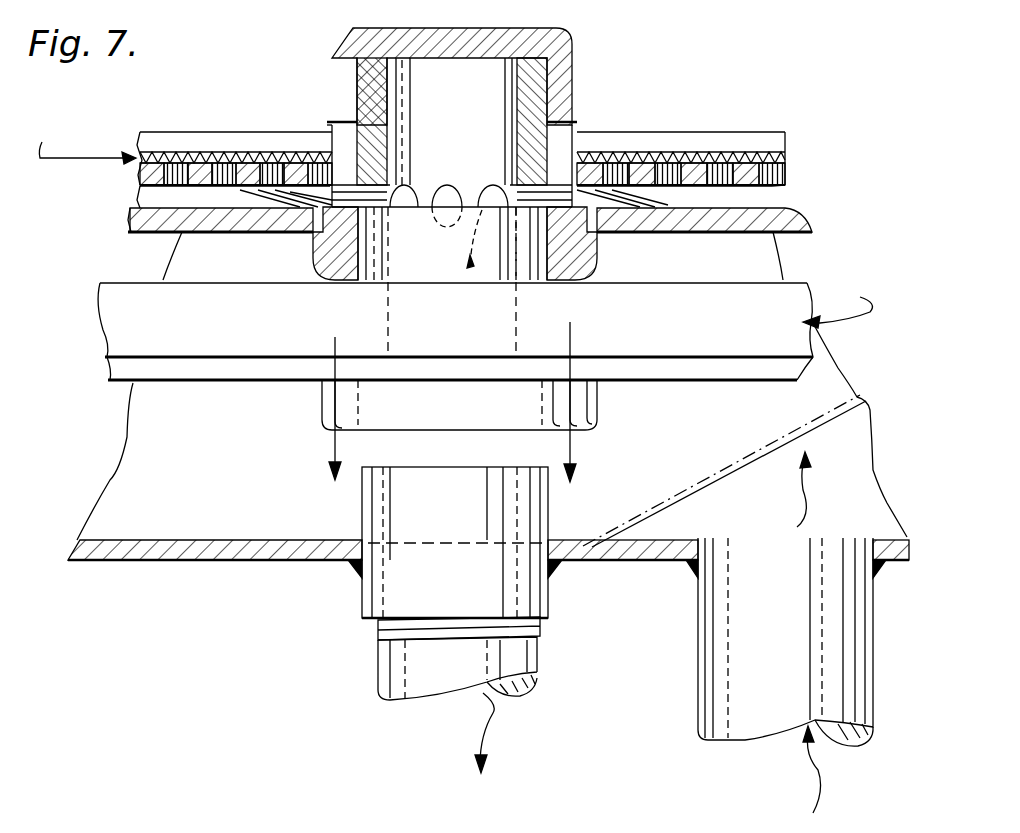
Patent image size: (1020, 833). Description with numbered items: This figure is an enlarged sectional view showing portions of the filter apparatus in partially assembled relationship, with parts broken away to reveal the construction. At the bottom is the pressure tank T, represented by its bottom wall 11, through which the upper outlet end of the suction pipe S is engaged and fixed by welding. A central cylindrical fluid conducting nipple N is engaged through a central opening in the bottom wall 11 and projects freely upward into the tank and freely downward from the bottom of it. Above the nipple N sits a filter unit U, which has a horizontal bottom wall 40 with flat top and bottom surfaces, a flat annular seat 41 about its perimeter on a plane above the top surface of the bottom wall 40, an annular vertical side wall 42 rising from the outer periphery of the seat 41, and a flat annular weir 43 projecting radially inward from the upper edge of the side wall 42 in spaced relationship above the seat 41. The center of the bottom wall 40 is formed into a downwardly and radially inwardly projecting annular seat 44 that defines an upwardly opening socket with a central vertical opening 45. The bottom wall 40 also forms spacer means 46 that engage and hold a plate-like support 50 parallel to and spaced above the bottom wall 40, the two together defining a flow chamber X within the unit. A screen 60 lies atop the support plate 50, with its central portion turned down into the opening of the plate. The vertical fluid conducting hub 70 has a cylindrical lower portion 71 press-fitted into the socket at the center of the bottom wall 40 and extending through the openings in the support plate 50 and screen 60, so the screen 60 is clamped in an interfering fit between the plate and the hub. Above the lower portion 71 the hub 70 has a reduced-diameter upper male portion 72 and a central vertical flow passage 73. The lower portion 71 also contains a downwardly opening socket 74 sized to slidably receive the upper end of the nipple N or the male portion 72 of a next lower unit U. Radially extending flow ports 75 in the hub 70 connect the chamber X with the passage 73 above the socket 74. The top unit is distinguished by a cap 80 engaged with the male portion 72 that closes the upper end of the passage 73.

The bottom wall 11 is at (185, 560).
The bottom wall 40 is at (140, 230).
The annular seat 41 is at (683, 363).
The side wall 42 is at (793, 338).
The annular weir 43 is at (765, 140).
The annular seat 44 is at (313, 248).
The central vertical opening 45 is at (385, 268).
The spacer means 46 is at (150, 196).
The support plate 50 is at (773, 193).
The screen 60 is at (787, 158).
The hub 70 is at (545, 73).
The lower portion 71 is at (333, 132).
The upper male portion 72 is at (333, 60).
The flow passage 73 is at (388, 106).
The socket 74 is at (363, 240).
The flow ports 75 is at (462, 190).
The cap 80 is at (757, 135).
The nipple N is at (365, 503).
The suction pipe S is at (707, 665).
The pressure tank T is at (378, 676).
The filter unit U is at (452, 224).
The flow chamber X is at (780, 180).